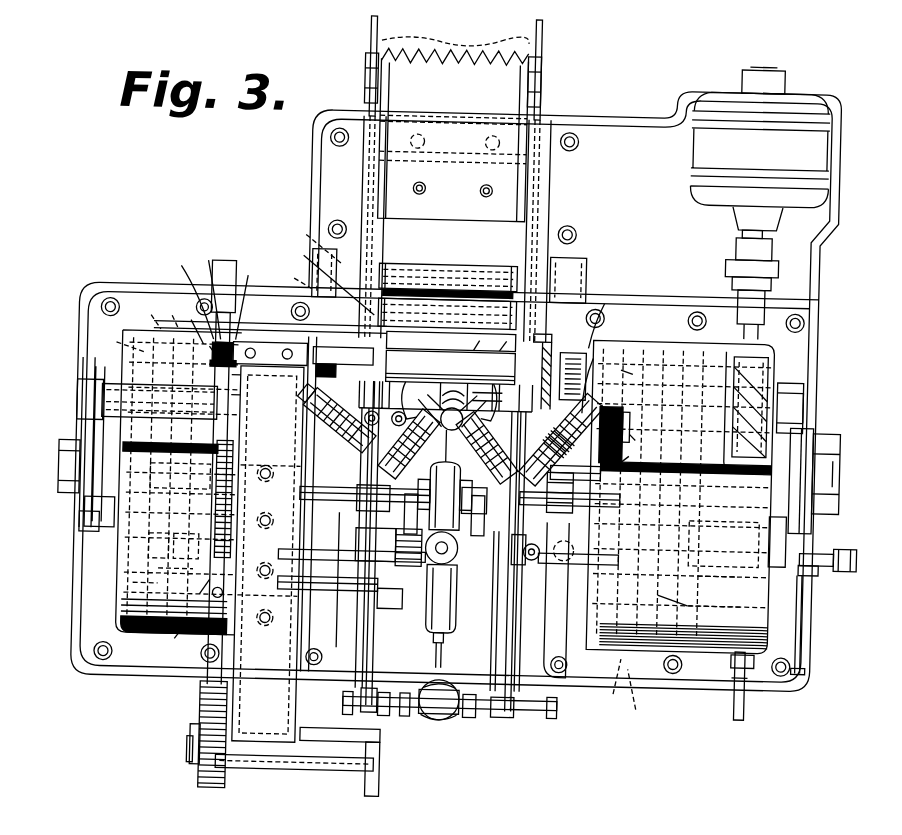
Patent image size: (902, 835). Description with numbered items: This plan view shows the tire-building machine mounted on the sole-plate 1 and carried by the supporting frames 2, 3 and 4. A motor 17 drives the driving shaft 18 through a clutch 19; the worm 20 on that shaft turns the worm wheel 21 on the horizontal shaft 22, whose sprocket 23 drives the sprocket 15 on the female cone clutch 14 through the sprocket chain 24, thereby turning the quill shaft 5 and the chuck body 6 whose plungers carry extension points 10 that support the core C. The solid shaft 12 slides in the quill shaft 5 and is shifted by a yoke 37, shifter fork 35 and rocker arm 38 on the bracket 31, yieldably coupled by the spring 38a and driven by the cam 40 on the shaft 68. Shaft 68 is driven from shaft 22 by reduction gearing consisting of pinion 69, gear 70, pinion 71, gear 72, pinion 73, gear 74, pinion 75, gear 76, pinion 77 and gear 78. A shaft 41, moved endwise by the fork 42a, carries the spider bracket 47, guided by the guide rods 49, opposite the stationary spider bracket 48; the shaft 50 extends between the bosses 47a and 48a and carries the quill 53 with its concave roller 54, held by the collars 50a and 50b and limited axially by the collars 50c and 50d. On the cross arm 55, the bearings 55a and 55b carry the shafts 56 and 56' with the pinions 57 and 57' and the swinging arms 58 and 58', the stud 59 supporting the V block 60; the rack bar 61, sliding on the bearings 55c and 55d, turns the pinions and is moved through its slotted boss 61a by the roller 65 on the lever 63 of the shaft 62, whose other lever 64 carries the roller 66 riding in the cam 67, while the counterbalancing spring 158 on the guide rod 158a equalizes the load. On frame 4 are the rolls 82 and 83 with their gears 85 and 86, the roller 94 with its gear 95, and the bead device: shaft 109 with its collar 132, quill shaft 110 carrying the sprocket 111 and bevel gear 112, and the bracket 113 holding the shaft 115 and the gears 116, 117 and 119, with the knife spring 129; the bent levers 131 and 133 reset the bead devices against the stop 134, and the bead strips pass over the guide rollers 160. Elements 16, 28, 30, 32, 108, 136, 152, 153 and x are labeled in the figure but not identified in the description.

The sole-plate 1 is at (80, 636).
The supporting frame 2 is at (808, 612).
The supporting frame 3 is at (122, 608).
The supporting frame 4 is at (548, 176).
The quill shaft 5 is at (558, 600).
The chuck body 6 is at (484, 590).
The extension points 10 is at (452, 660).
The solid shaft 12 is at (780, 530).
The female cone clutch 14 is at (637, 697).
The sprocket 15 is at (606, 685).
The hanger tab 16 is at (693, 655).
The motor 17 is at (760, 149).
The driving shaft 18 is at (760, 312).
The clutch 19 is at (773, 252).
The worm 20 is at (815, 388).
The worm wheel 21 is at (775, 350).
The horizontal shaft 22 is at (680, 496).
The sprocket 23 is at (636, 370).
The sprocket chain 24 is at (631, 452).
The passage 28 is at (677, 606).
The passage 30 is at (718, 580).
The bracket 31 is at (714, 600).
The passage 32 is at (723, 543).
The shifter fork 35 is at (810, 575).
The yoke 37 is at (820, 562).
The rocker arm 38 is at (850, 540).
The spring 38a is at (820, 545).
The cam 40 is at (805, 440).
The shaft 41 is at (356, 560).
The fork 42a is at (268, 582).
The spider bracket 47 is at (371, 627).
The boss 47a is at (366, 712).
The spider bracket 48 is at (510, 619).
The boss 48a is at (512, 716).
The guide rods 49 is at (439, 507).
The shaft 50 is at (562, 720).
The fixed collar 50a is at (476, 717).
The fixed collar 50b is at (412, 717).
The fixing collar 50c is at (394, 717).
The fixing collar 50d is at (348, 697).
The quill 53 is at (464, 712).
The concave roller 54 is at (444, 722).
The cross arm 55 is at (268, 554).
The horizontal bearing 55a is at (294, 773).
The horizontal bearing 55b is at (262, 347).
The bearing 55c is at (196, 742).
The bearing 55d is at (206, 310).
The shaft 56 is at (356, 756).
The shaft 56' is at (183, 294).
The pinion 57 is at (181, 755).
The pinion 57' is at (207, 291).
The swinging arm 58 is at (349, 768).
The swinging arm 58' is at (326, 279).
The stud 59 is at (388, 559).
The V block 60 is at (447, 459).
The rack bar 61 is at (205, 702).
The slotted boss 61a is at (252, 399).
The shaft 62 is at (78, 407).
The lever 63 is at (222, 420).
The lever 64 is at (100, 483).
The roller 65 is at (251, 376).
The roller 66 is at (77, 537).
The cam 67 is at (84, 387).
The shaft 68 is at (62, 449).
The pinion 69 is at (120, 351).
The gear 70 is at (144, 583).
The pinion 71 is at (158, 546).
The gear 72 is at (145, 313).
The pinion 73 is at (167, 314).
The gear 74 is at (175, 570).
The pinion 75 is at (185, 546).
The gear 76 is at (190, 323).
The pinion 77 is at (201, 356).
The gear 78 is at (194, 587).
The roll 82 is at (396, 300).
The roll 83 is at (436, 272).
The gear 85 is at (312, 244).
The gear 86 is at (290, 276).
The fifth roller 94 is at (481, 341).
The gear 95 is at (502, 342).
The board 108 is at (454, 128).
The shaft 109 is at (583, 375).
The quill shaft 110 is at (564, 371).
The sprocket 111 is at (600, 300).
The bevel gear 112 is at (595, 345).
The bracket 113 is at (500, 395).
The shaft 115 is at (660, 475).
The bevel gear 116 is at (621, 402).
The spur gear 117 is at (646, 437).
The spur gear 119 is at (643, 427).
The spring 129 is at (450, 435).
The bent lever 131 is at (446, 383).
The collar 132 is at (557, 329).
The bent lever 133 is at (451, 367).
The stop 134 is at (450, 340).
The block 136 is at (546, 543).
The block 152 is at (399, 600).
The boss 153 is at (456, 542).
The counterbalancing spring 158 is at (172, 647).
The guide rod 158a is at (180, 476).
The guide rollers 160 is at (568, 85).
The core C is at (430, 682).
The reference point x is at (242, 299).